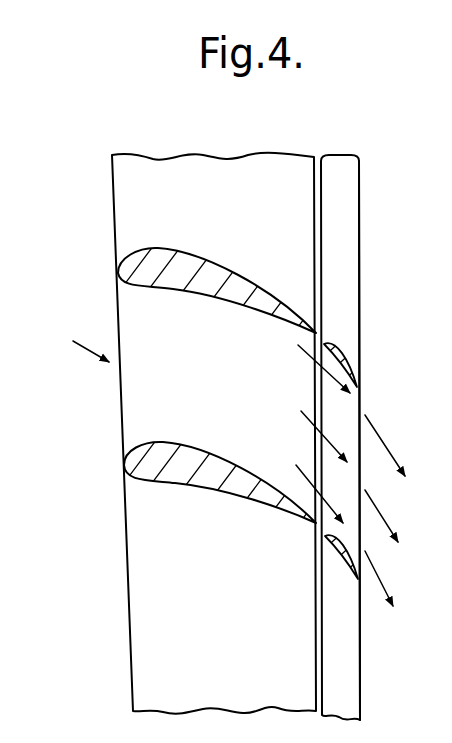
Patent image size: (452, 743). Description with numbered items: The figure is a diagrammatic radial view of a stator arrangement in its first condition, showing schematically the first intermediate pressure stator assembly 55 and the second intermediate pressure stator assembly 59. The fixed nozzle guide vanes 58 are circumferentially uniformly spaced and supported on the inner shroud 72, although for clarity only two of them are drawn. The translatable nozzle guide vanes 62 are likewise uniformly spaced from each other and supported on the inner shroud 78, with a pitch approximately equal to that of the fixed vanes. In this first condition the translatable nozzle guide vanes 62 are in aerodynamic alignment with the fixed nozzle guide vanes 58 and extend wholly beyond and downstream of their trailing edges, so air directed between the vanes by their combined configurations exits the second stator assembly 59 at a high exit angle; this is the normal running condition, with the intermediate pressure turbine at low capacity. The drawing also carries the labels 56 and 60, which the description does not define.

The first intermediate pressure stator assembly 55 is at (135, 165).
The rotor rotation direction 56 is at (73, 343).
The fixed nozzle guide vanes 58 is at (180, 258).
The second intermediate pressure stator assembly 59 is at (333, 165).
The gas flow direction 60 is at (384, 419).
The translatable nozzle guide vanes 62 is at (333, 346).
The inner shroud 72 is at (142, 617).
The inner shroud 78 is at (345, 688).